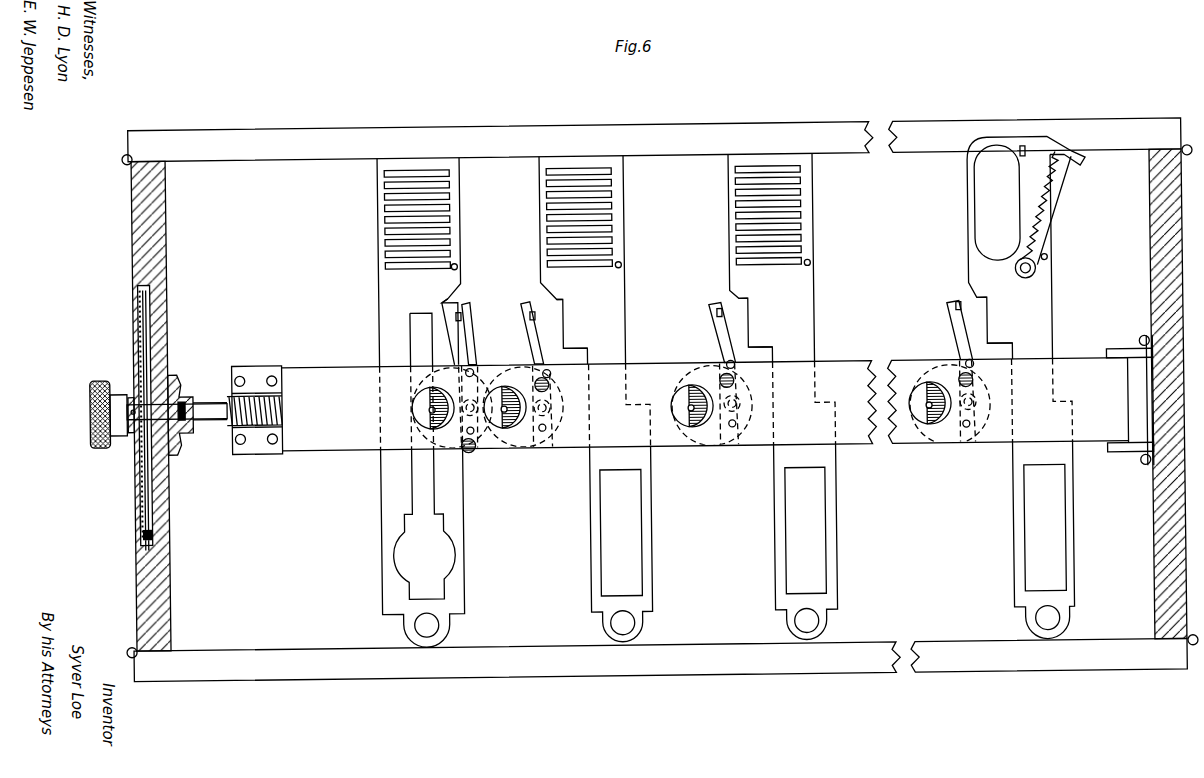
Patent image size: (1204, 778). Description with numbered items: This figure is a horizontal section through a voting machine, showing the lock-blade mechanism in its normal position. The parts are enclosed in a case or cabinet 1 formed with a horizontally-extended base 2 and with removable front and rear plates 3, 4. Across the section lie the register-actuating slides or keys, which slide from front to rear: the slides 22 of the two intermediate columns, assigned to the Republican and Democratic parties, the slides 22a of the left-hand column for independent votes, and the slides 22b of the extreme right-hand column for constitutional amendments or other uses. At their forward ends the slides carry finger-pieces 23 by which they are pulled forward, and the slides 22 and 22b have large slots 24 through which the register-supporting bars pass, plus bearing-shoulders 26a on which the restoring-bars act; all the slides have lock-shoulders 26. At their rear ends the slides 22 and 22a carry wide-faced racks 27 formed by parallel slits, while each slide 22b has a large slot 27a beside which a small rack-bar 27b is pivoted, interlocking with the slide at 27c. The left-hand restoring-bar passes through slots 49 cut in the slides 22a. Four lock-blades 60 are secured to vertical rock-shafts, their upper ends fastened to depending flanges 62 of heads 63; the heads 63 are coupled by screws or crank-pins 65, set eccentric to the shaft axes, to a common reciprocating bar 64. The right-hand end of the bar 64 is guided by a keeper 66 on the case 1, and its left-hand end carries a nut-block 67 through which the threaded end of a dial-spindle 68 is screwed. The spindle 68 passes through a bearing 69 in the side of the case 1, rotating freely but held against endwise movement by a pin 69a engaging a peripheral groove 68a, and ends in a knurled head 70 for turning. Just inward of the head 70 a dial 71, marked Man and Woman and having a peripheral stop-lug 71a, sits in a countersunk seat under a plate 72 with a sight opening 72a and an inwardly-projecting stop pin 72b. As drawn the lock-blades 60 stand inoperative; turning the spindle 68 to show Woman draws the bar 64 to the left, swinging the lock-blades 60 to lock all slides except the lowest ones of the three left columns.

The case or cabinet 1 is at (138, 219).
The horizontally-extended base 2 is at (704, 392).
The removable front plate 3 is at (925, 672).
The removable rear plate 4 is at (909, 124).
The register-actuating slides or keys 22 is at (649, 584).
The register-actuating slides of the left-hand column 22a is at (389, 538).
The register-actuating slides of the extreme right-hand column 22b is at (1071, 565).
The finger-pieces 23 is at (441, 628).
The large slots 24 is at (631, 523).
The lock-shoulders 26 is at (553, 298).
The bearing-shoulders 26a is at (583, 345).
The wide-faced racks 27 is at (551, 219).
The large slots in rear ends of slides 27a is at (980, 226).
The small rack-bar 27b is at (1058, 212).
The interlocking engagement 27c is at (1028, 152).
The slots in slides 49 is at (402, 332).
The lock-blades 60 is at (523, 306).
The depending flanges 62 is at (527, 349).
The heads 63 is at (487, 389).
The reciprocating bar 64 is at (888, 450).
The screws or crank-pins 65 is at (549, 386).
The keeper 66 is at (1138, 466).
The nut-block 67 is at (264, 366).
The dial-spindle 68 is at (210, 392).
The peripheral groove 68a is at (181, 440).
The bearing 69 is at (174, 372).
The pin 69a is at (190, 376).
The knurled head 70 is at (107, 443).
The dial 71 is at (140, 314).
The peripheral stop-lug 71a is at (152, 545).
The plate 72 is at (134, 289).
The sight opening or slot 72a is at (133, 521).
The stop pin or lug 72b is at (152, 528).